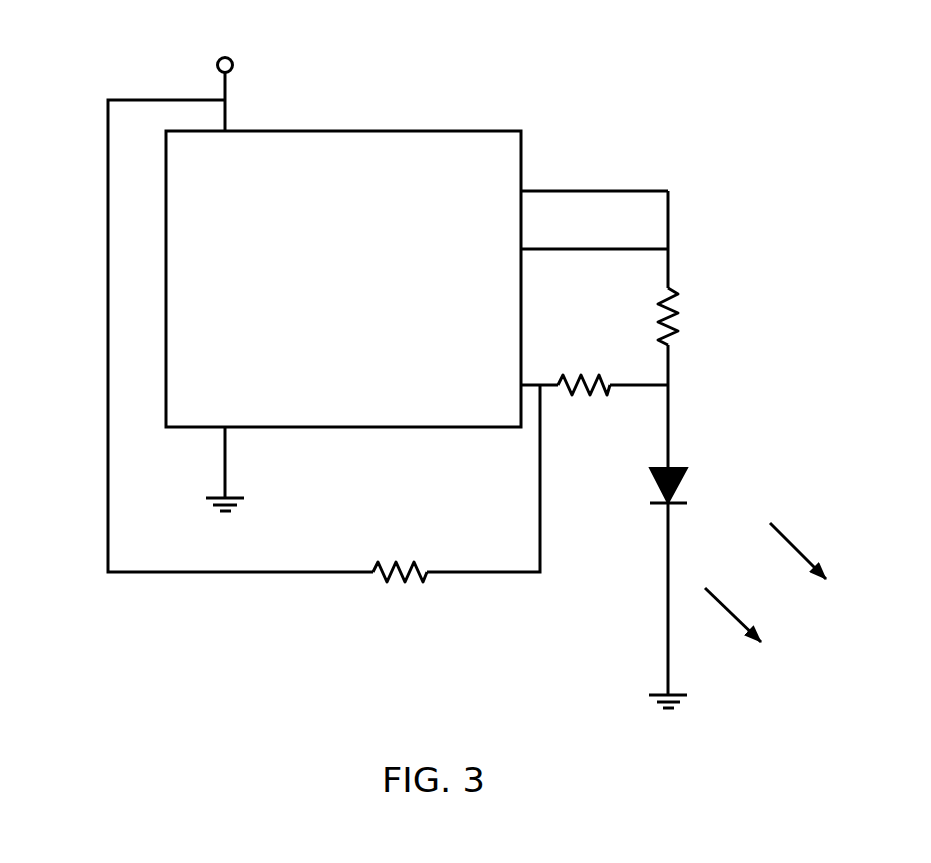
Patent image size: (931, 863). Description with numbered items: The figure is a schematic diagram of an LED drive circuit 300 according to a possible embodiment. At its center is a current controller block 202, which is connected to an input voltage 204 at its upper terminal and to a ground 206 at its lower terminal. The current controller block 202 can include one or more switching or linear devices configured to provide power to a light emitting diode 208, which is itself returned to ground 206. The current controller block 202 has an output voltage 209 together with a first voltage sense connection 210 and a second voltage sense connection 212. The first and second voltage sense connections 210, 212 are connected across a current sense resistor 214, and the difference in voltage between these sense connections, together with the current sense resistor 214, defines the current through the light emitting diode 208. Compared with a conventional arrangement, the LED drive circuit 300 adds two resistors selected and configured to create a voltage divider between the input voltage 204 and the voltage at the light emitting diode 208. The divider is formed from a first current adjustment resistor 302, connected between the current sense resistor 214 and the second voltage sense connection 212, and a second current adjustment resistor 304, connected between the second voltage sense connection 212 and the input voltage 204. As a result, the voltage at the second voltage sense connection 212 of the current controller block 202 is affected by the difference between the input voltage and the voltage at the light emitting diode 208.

The LED drive circuit 300 is at (442, 372).
The input voltage 204 is at (225, 96).
The current controller block 202 is at (343, 279).
The output voltage 209 is at (543, 186).
The first voltage sense connection 210 is at (540, 248).
The second voltage sense connection 212 is at (527, 384).
The current sense resistor 214 is at (658, 319).
The first current adjustment resistor 302 is at (596, 393).
The light emitting diode 208 is at (651, 471).
The ground 206 is at (222, 453).
The second current adjustment resistor 304 is at (408, 580).